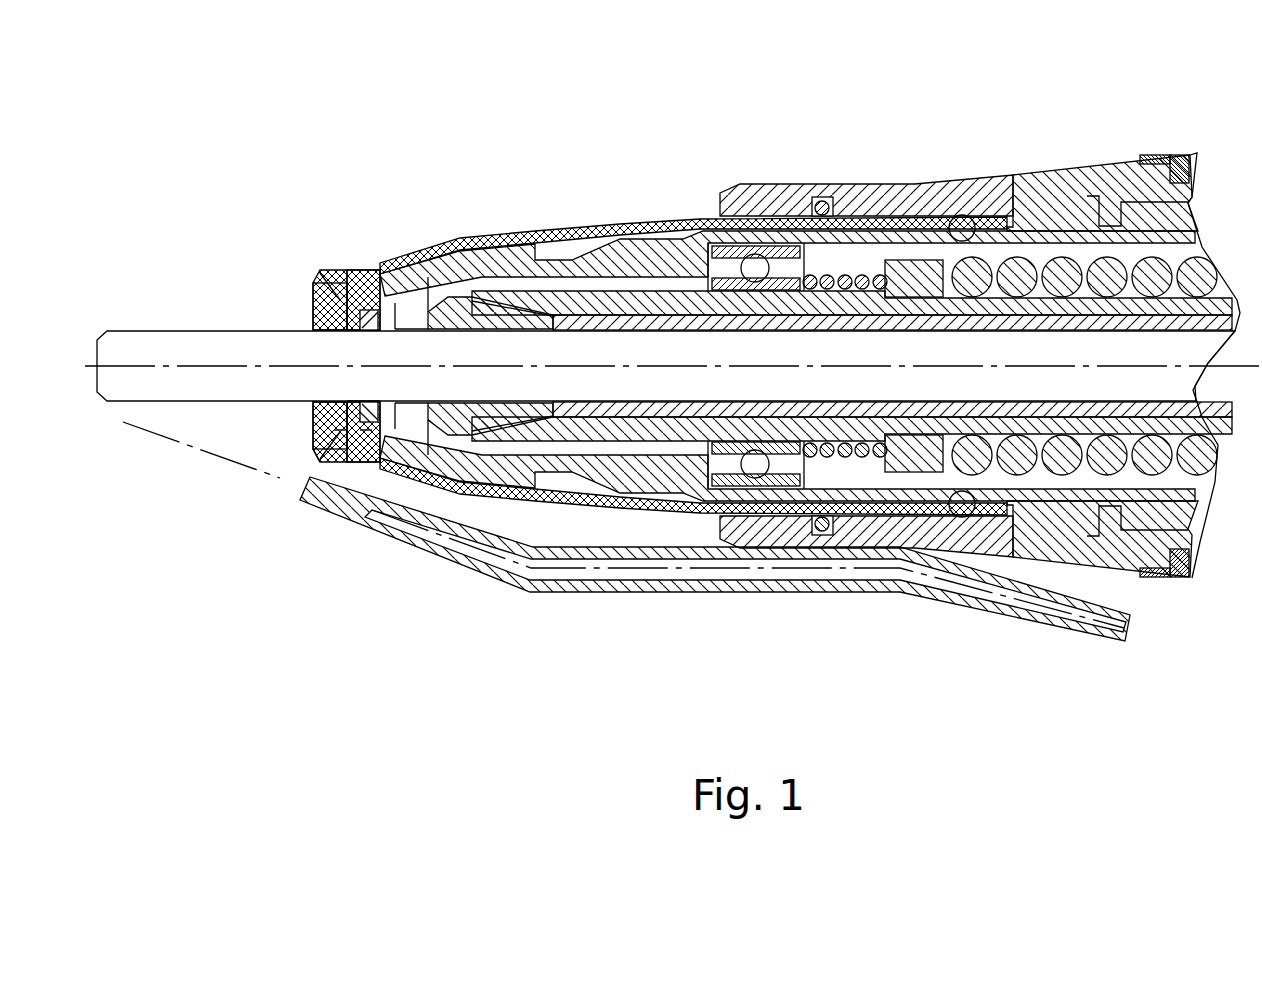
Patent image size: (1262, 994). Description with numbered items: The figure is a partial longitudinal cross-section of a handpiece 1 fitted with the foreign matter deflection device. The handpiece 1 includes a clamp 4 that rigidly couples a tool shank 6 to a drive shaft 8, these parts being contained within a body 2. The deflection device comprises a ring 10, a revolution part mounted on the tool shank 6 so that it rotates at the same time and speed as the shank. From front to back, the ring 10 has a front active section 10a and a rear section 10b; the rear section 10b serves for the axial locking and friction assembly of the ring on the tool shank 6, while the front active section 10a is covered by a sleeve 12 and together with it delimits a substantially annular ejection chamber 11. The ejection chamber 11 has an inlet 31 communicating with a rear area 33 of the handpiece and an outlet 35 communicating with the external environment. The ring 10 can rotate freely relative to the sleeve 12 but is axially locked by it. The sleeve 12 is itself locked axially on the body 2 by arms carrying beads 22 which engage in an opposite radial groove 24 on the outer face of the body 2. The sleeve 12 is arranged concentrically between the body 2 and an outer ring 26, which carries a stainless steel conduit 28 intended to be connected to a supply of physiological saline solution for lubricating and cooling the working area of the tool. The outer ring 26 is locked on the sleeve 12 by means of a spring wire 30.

The handpiece 1 is at (1048, 131).
The body 2 is at (615, 260).
The clamp 4 is at (437, 318).
The tool shank 6 is at (170, 343).
The drive shaft 8 is at (530, 300).
The ring 10 is at (301, 436).
The front active section 10a is at (313, 283).
The rear section 10b is at (347, 270).
The ejection chamber 11 is at (344, 448).
The sleeve 12 is at (370, 448).
The beads 22 is at (977, 227).
The radial groove 24 is at (960, 237).
The outer ring 26 is at (770, 196).
The stainless steel conduit 28 is at (965, 600).
The spring wire 30 is at (822, 201).
The inlet 31 is at (339, 391).
The rear area 33 is at (380, 403).
The outlet 35 is at (314, 463).